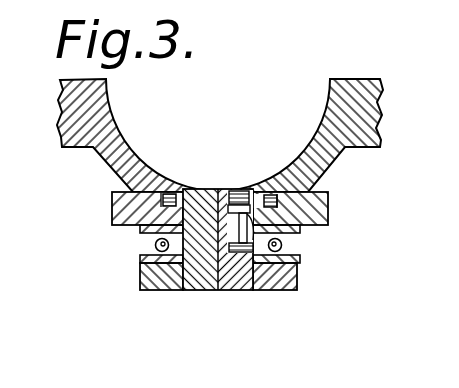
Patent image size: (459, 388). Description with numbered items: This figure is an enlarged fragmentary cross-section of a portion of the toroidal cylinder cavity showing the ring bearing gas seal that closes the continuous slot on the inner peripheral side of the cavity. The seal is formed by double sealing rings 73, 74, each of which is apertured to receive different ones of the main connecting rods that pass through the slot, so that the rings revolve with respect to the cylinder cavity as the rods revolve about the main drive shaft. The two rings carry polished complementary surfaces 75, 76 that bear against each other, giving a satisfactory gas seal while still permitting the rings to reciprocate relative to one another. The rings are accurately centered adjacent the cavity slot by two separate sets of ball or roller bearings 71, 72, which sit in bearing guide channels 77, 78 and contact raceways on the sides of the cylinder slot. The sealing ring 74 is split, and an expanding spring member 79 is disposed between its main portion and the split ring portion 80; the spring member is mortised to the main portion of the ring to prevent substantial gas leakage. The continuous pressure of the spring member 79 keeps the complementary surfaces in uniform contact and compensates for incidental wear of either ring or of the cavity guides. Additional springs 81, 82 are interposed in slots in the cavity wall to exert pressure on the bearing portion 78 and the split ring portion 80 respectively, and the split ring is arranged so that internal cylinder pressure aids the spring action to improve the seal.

The ball bearing 71 is at (150, 247).
The ball bearing 72 is at (283, 247).
The sealing ring 73 is at (196, 288).
The sealing ring 74 is at (283, 286).
The polished complementary surface 75 is at (208, 288).
The polished complementary surface 76 is at (228, 272).
The bearing guide channel 77 is at (140, 235).
The bearing guide channel 78 is at (300, 236).
The expanding spring member 79 is at (234, 198).
The split ring portion 80 is at (250, 195).
The additional spring 81 is at (170, 198).
The additional spring 82 is at (270, 197).